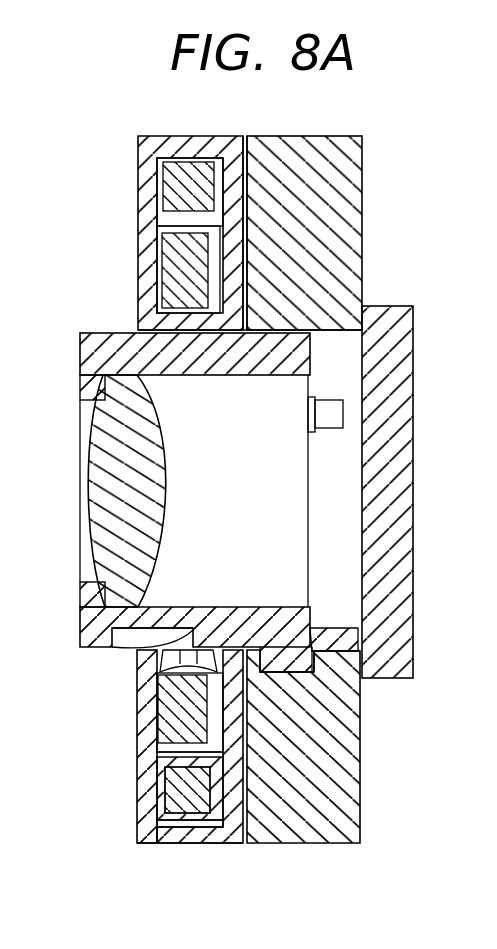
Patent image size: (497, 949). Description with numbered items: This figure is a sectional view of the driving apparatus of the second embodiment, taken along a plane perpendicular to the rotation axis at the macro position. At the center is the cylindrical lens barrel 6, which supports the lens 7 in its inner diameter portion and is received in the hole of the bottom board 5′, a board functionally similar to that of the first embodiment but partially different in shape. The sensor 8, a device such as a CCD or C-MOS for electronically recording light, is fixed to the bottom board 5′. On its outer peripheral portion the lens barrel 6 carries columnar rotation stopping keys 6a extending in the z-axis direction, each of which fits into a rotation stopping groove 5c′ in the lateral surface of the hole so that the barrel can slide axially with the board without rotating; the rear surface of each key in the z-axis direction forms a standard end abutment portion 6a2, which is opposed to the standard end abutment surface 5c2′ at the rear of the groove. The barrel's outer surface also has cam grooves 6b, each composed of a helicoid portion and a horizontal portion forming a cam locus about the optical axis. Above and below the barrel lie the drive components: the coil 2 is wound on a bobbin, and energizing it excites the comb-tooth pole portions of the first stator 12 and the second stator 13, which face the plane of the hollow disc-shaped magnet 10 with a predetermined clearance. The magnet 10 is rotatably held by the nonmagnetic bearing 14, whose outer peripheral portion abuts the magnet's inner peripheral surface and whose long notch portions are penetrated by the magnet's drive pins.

The coil 2 is at (185, 803).
The bottom board 5′ is at (337, 815).
The rotation stopping groove 5c′ is at (318, 668).
The standard end abutment surface 5c2′ is at (343, 658).
The lens barrel 6 is at (100, 337).
The rotation stopping key 6a is at (310, 632).
The standard end abutment portion 6a2 is at (323, 649).
The cam groove 6b is at (150, 632).
The lens 7 is at (120, 490).
The sensor 8 is at (378, 678).
The magnet 10 is at (182, 719).
The first stator 12 is at (147, 770).
The second stator 13 is at (190, 828).
The bearing 14 is at (175, 316).